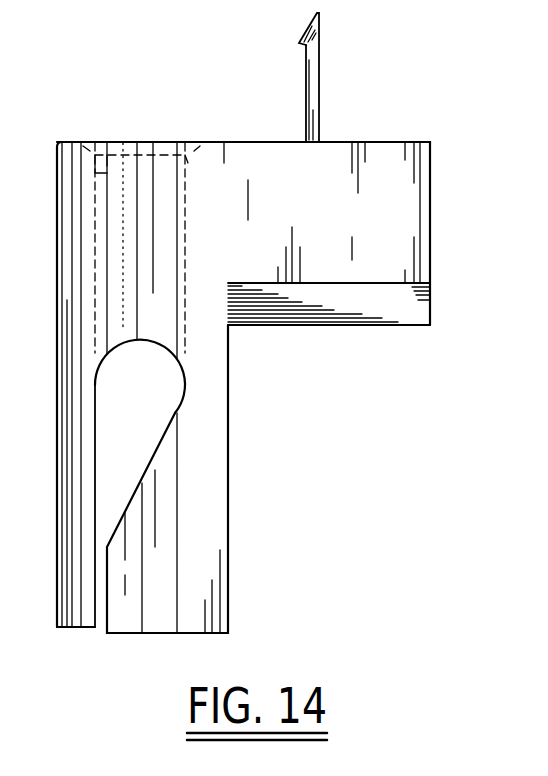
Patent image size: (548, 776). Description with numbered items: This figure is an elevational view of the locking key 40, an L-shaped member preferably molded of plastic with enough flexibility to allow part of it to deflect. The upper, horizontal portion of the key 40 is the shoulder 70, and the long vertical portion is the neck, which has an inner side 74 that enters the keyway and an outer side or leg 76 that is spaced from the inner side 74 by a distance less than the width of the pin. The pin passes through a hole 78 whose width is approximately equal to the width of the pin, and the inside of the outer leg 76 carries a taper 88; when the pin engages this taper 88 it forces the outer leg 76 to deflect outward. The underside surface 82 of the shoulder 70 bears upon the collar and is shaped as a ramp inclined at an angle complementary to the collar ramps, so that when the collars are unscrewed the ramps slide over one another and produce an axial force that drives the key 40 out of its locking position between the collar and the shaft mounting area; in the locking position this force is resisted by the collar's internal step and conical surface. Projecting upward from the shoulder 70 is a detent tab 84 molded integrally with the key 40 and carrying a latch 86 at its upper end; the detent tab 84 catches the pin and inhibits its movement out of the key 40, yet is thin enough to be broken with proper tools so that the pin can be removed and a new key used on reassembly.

The key 40 is at (165, 112).
The shoulder 70 is at (423, 222).
The inner side 74 is at (58, 610).
The outer side or leg 76 is at (217, 535).
The hole 78 is at (118, 147).
The underside surface 82 is at (406, 310).
The detent tab 84 is at (320, 43).
The latch 86 is at (302, 47).
The taper 88 is at (158, 440).